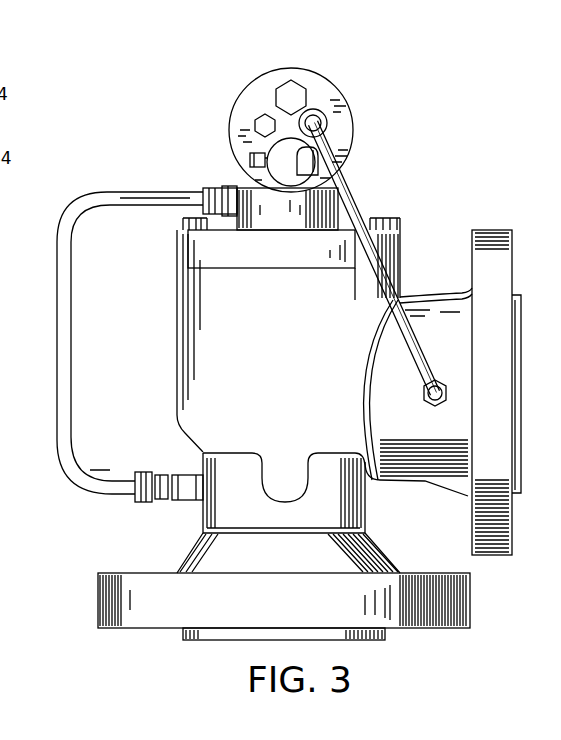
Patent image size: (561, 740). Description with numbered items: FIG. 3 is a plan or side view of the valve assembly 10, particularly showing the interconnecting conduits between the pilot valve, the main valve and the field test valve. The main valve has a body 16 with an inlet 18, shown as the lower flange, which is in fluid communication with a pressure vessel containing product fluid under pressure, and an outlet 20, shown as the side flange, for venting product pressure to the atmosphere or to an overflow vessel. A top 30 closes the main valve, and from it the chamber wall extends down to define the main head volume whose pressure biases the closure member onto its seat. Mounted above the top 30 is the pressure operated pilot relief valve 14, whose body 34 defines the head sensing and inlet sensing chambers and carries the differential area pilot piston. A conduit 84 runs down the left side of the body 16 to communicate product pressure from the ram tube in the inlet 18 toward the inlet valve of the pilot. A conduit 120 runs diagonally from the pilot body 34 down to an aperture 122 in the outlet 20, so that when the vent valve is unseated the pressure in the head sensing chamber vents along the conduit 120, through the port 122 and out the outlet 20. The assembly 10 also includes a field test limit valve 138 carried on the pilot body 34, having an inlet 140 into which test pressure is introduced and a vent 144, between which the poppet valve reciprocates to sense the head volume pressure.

The valve assembly 10 is at (373, 128).
The pilot relief valve 14 is at (244, 90).
The body 16 is at (302, 354).
The inlet 18 is at (222, 635).
The outlet 20 is at (521, 388).
The top 30 is at (302, 256).
The body 34 is at (353, 150).
The conduit 84 is at (76, 320).
The conduit 120 is at (362, 213).
The aperture 122 is at (436, 407).
The field test limit valve 138 is at (238, 170).
The inlet 140 is at (250, 159).
The vent 144 is at (320, 115).